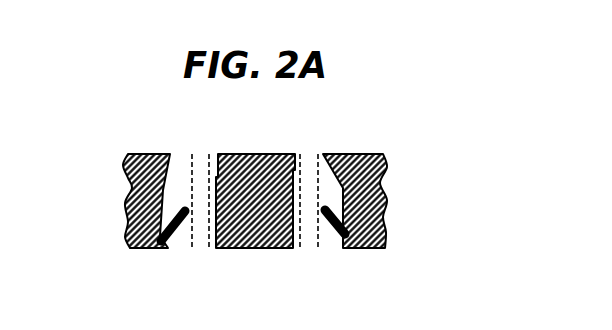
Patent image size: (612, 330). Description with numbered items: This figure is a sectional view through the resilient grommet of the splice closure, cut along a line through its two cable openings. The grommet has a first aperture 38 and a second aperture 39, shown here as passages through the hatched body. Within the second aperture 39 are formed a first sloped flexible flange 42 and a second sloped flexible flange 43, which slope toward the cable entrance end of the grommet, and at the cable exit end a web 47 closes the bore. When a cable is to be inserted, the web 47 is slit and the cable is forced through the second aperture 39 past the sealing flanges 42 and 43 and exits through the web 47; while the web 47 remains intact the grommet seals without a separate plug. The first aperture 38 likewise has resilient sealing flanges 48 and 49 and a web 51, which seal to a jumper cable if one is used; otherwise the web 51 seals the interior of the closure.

The first aperture 38 is at (171, 154).
The second aperture 39 is at (297, 188).
The first sloped flexible flange 42 is at (255, 201).
The second sloped flexible flange 43 is at (383, 216).
The web 47 is at (331, 248).
The resilient sealing flange 48 is at (126, 199).
The resilient sealing flange 49 is at (180, 233).
The web 51 is at (206, 248).